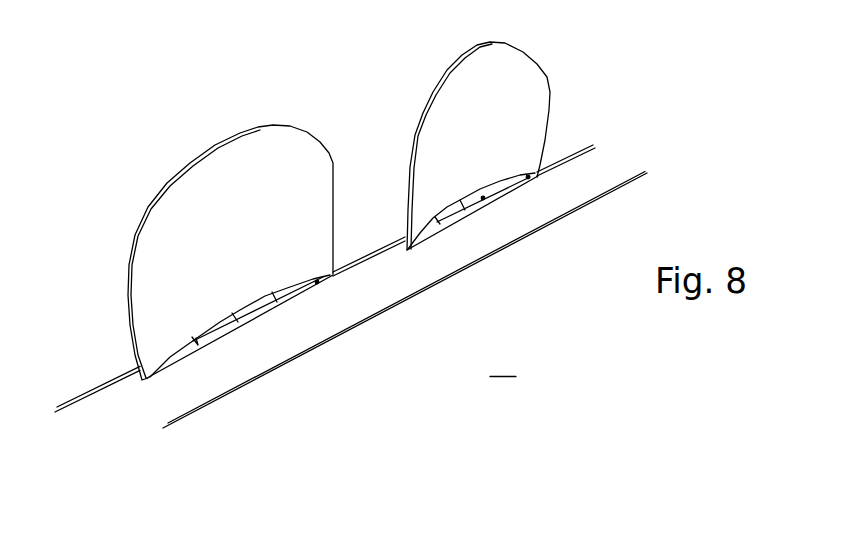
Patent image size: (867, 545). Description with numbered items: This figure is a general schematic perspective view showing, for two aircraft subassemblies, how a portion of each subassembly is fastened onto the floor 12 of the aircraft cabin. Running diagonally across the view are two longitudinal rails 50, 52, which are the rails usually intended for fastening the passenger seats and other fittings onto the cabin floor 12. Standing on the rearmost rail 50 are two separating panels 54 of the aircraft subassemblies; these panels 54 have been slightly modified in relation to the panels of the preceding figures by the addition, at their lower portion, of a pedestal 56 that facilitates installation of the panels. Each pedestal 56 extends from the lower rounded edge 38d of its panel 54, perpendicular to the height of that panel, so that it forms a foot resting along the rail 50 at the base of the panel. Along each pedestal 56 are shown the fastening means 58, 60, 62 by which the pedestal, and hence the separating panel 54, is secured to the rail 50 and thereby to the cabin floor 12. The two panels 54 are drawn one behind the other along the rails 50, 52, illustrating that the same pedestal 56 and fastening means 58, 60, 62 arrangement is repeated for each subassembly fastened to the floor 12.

The floor 12 is at (503, 365).
The lower rounded edge 38d is at (363, 323).
The longitudinal rail 50 is at (595, 148).
The longitudinal rail 52 is at (647, 173).
The separating panel 54 is at (339, 200).
The pedestal 56 is at (342, 284).
The fastening means 58 is at (361, 315).
The fastening means 60 is at (375, 312).
The fastening means 62 is at (407, 250).